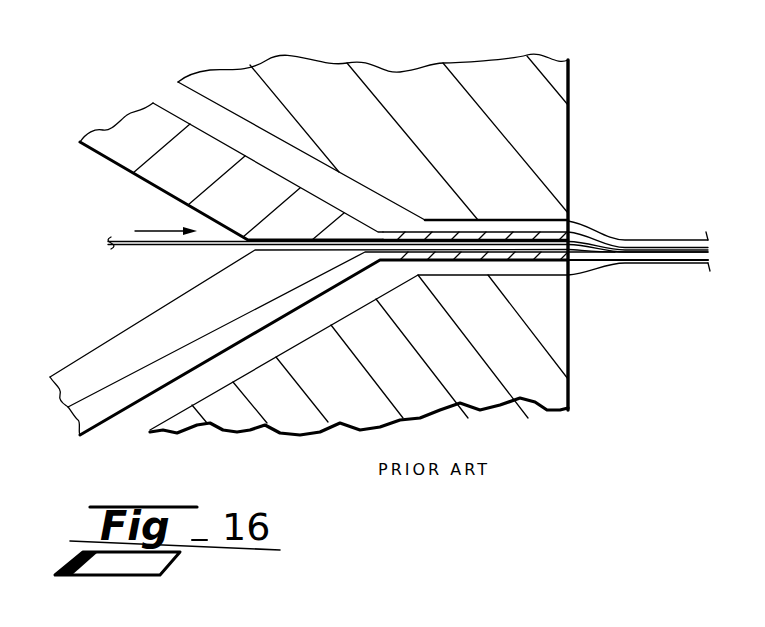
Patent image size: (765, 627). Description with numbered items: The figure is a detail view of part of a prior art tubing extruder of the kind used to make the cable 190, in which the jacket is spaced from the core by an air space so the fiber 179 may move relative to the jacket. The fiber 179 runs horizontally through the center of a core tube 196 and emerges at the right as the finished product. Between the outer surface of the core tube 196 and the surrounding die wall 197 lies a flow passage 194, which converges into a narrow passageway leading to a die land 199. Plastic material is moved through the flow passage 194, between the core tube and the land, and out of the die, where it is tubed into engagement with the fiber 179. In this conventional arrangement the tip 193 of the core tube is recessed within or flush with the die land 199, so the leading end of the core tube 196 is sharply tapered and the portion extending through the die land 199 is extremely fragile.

The fiber 179 is at (153, 248).
The cable 190 is at (632, 236).
The tip of the core tube 193 is at (507, 231).
The flow passage 194 is at (303, 163).
The core tube 196 is at (197, 150).
The die wall 197 is at (388, 187).
The die land 199 is at (542, 236).